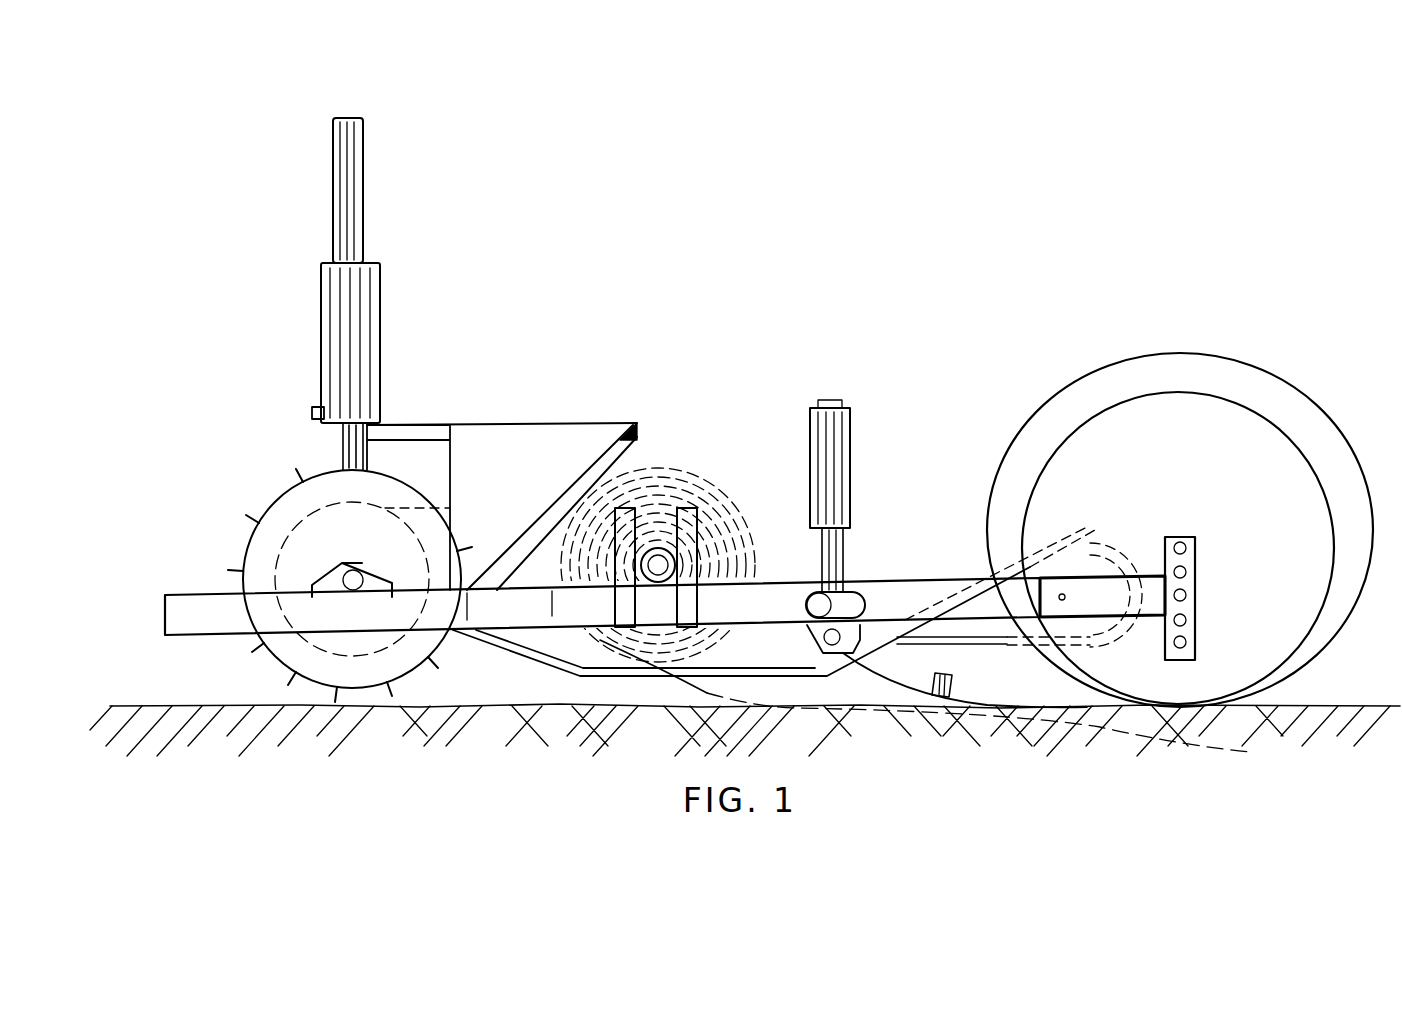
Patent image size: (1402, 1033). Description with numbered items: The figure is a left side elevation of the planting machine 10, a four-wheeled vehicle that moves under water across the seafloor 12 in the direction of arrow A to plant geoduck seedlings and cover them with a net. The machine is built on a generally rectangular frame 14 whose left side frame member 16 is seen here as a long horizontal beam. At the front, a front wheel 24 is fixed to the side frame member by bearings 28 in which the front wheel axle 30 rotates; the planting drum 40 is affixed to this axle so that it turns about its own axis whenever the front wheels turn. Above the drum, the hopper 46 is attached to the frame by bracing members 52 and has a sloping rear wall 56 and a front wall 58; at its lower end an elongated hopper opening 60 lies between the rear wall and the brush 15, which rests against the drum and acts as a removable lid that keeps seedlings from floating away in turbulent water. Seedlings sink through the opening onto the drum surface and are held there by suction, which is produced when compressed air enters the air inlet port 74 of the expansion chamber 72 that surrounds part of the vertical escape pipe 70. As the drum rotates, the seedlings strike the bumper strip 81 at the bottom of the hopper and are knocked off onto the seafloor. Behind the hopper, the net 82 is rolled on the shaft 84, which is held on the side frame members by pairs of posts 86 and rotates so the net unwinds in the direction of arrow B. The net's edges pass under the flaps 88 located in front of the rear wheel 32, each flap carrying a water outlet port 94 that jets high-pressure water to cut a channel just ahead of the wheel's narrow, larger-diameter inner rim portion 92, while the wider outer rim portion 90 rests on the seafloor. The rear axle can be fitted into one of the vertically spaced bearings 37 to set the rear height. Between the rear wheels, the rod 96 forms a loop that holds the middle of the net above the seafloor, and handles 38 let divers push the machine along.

The planting machine 10 is at (905, 240).
The seafloor 12 is at (452, 766).
The frame 14 is at (904, 552).
The brush 15 is at (405, 508).
The left side frame member 16 is at (195, 628).
The front wheel 24 is at (258, 556).
The bearings 28 is at (330, 580).
The front wheel axle 30 is at (360, 571).
The rear wheel 32 is at (1098, 428).
The vertically spaced bearings 37 is at (1186, 548).
The handles 38 is at (838, 428).
The planting drum 40 is at (300, 520).
The hopper 46 is at (545, 430).
The bracing members 52 is at (640, 424).
The sloping rear wall 56 is at (525, 545).
The front wall 58 is at (450, 475).
The hopper opening 60 is at (437, 608).
The escape pipe 70 is at (360, 146).
The expansion chamber 72 is at (372, 312).
The air inlet port 74 is at (311, 413).
The bumper strip 81 is at (440, 605).
The net 82 is at (722, 500).
The shaft 84 is at (660, 565).
The posts 86 is at (697, 606).
The flaps 88 is at (905, 686).
The outer rim portion 90 is at (1220, 395).
The inner rim portion 92 is at (1210, 352).
The water outlet port 94 is at (950, 678).
The rod 96 is at (508, 640).
The arrow A is at (245, 232).
The arrow B is at (818, 751).